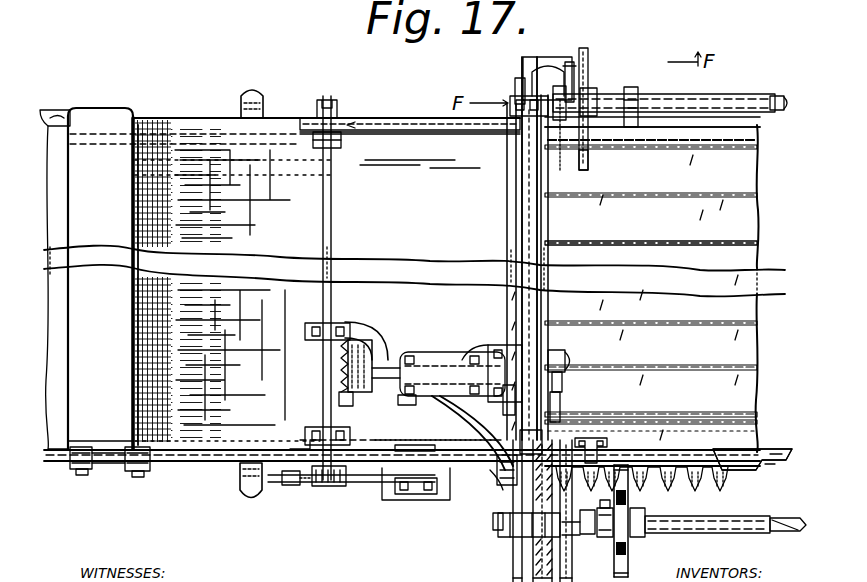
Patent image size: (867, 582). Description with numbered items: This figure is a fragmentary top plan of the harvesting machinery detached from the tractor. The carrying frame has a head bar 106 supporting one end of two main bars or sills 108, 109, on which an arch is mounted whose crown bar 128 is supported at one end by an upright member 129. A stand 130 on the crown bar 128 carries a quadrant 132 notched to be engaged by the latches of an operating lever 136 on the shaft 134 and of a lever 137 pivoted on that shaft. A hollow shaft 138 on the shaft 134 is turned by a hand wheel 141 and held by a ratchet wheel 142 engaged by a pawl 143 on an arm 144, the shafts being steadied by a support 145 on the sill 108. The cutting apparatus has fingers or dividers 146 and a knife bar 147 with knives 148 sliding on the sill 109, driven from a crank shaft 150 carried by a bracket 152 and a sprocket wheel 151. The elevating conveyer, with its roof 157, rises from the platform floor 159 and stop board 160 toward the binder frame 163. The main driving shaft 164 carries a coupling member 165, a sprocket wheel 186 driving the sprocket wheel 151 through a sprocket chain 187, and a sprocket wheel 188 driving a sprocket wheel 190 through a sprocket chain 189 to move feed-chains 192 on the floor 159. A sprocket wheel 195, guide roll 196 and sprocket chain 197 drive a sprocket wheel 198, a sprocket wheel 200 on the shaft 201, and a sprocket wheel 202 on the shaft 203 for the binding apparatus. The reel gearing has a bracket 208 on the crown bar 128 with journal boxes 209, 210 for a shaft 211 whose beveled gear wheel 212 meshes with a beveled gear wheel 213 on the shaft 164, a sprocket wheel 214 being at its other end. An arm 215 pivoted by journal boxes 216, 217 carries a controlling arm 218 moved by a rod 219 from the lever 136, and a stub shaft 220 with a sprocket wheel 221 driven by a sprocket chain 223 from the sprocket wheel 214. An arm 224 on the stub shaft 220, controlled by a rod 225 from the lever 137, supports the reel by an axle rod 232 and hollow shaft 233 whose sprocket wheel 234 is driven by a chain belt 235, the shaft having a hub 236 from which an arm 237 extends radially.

The head bar 106 is at (248, 497).
The main bar or sill 108 is at (470, 115).
The main bar or sill 109 is at (427, 469).
The crown bar 128 is at (522, 248).
The upright member 129 is at (492, 493).
The stand 130 is at (503, 84).
The quadrant 132 is at (527, 72).
The shaft 134 is at (794, 99).
The operating lever 136 is at (512, 106).
The lever 137 is at (556, 68).
The hollow shaft 138 is at (664, 91).
The hand wheel 141 is at (600, 168).
The ratchet wheel 142 is at (562, 144).
The pawl 143 is at (591, 88).
The arm 144 is at (594, 98).
The support 145 is at (646, 98).
The fingers or dividers 146 is at (642, 487).
The knife bar 147 is at (662, 423).
The knives 148 is at (752, 471).
The crank shaft 150 is at (438, 433).
The sprocket wheel 151 is at (403, 504).
The bracket 152 is at (416, 500).
The roof 157 is at (149, 262).
The platform floor 159 is at (784, 280).
The stop board 160 is at (677, 147).
The binder frame 163 is at (44, 261).
The shaft 164 is at (350, 263).
The coupling member 165 is at (312, 98).
The sprocket wheel 186 is at (351, 495).
The sprocket chain 187 is at (342, 508).
The sprocket wheel 188 is at (341, 279).
The sprocket chain 189 is at (420, 161).
The sprocket wheel 190 is at (410, 148).
The feed-chains 192 is at (651, 225).
The sprocket wheel 195 is at (284, 429).
The guide roll 196 is at (321, 384).
The sprocket chain 197 is at (108, 477).
The sprocket wheel 198 is at (497, 493).
The sprocket wheel 200 is at (150, 471).
The shaft 201 is at (134, 493).
The sprocket wheel 202 is at (65, 464).
The shaft 203 is at (74, 486).
The bracket 208 is at (475, 328).
The journal box 209 is at (574, 350).
The journal box 210 is at (438, 360).
The shaft 211 is at (380, 338).
The beveled gear wheel 212 is at (354, 405).
The beveled gear wheel 213 is at (323, 366).
The sprocket wheel 214 is at (576, 367).
The arm 215 is at (472, 443).
The journal box 216 is at (474, 346).
The journal box 217 is at (393, 404).
The controlling arm 218 is at (490, 400).
The rod 219 is at (489, 267).
The stub shaft 220 is at (515, 542).
The sprocket wheel 221 is at (537, 574).
The sprocket chain 223 is at (577, 403).
The arm 224 is at (542, 511).
The rod 225 is at (566, 268).
The axle rod 232 is at (792, 511).
The hollow shaft 233 is at (707, 512).
The sprocket wheel 234 is at (595, 514).
The chain belt 235 is at (586, 524).
The hub 236 is at (645, 521).
The arm 237 is at (646, 531).